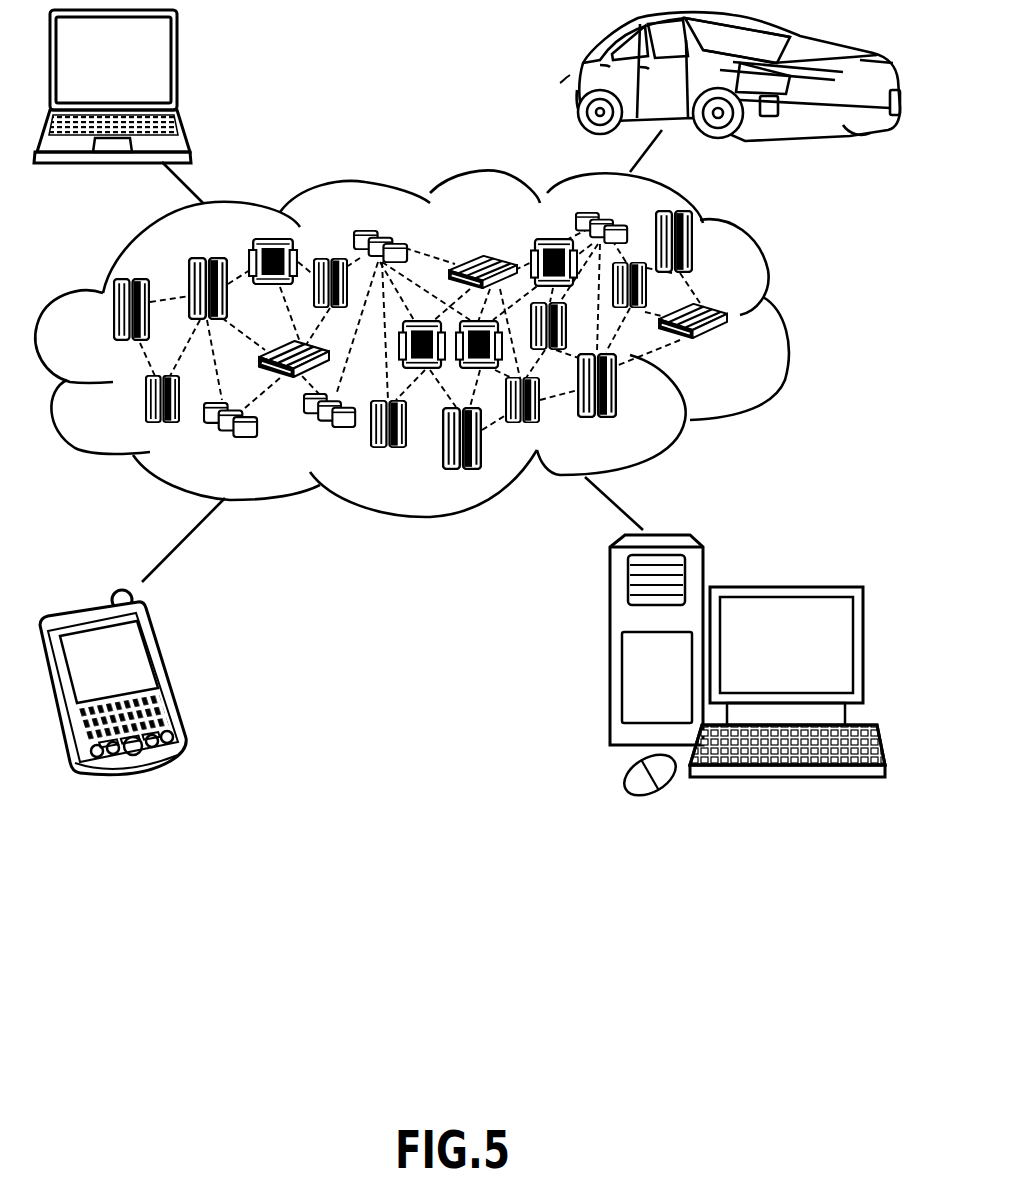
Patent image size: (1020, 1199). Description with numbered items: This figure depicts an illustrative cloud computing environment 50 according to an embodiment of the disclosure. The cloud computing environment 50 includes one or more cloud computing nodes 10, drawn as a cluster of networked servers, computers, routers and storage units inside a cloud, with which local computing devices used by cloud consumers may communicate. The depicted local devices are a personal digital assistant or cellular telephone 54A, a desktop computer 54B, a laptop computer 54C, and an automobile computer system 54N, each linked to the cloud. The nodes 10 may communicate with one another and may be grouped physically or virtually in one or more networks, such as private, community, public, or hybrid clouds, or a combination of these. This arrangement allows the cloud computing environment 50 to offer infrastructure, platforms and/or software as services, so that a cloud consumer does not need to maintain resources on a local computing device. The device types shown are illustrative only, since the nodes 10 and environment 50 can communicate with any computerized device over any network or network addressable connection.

The cloud computing node 10 is at (742, 352).
The cloud computing environment 50 is at (787, 318).
The personal digital assistant or cellular telephone 54A is at (172, 672).
The desktop computer 54B is at (783, 587).
The laptop computer 54C is at (177, 66).
The automobile computer system 54N is at (581, 82).